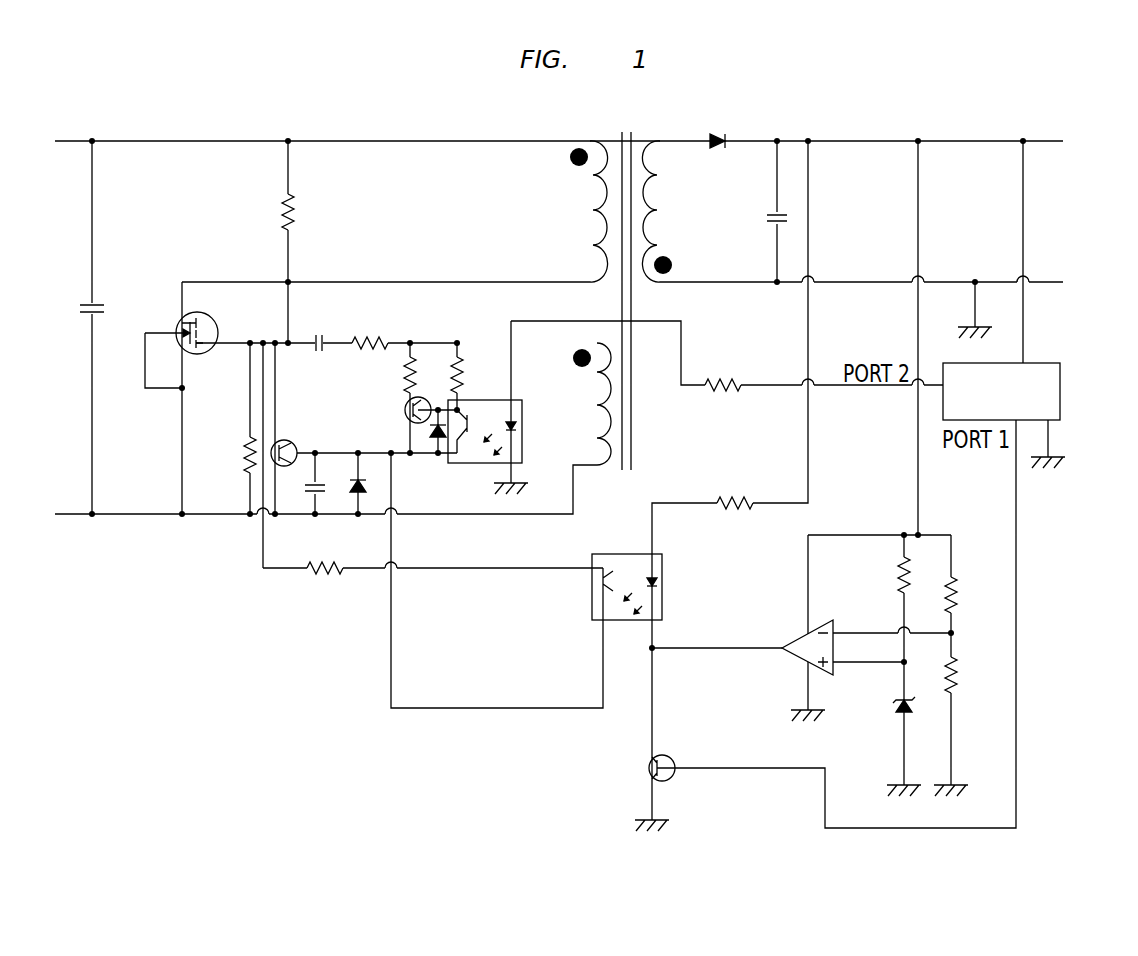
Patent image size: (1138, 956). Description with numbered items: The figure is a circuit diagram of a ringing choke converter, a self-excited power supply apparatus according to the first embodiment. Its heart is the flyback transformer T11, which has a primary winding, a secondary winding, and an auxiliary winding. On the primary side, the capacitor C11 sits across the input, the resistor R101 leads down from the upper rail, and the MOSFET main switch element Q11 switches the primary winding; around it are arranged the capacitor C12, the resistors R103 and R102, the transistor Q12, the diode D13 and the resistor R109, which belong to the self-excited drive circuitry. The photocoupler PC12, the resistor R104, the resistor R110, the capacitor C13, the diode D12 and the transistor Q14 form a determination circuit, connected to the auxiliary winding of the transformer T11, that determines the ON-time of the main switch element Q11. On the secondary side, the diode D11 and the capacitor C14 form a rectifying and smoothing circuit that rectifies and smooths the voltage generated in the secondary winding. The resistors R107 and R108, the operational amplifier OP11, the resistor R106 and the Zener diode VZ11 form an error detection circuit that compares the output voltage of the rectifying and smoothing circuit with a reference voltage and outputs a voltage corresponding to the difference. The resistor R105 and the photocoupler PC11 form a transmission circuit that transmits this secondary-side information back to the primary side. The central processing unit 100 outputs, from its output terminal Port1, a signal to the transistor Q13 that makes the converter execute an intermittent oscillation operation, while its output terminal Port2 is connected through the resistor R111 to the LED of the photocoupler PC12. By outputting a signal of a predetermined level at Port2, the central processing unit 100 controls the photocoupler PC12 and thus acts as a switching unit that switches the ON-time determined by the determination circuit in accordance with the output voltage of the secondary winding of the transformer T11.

The flyback transformer T11 is at (619, 282).
The capacitor C11 is at (73, 309).
The resistor R101 is at (261, 212).
The main switch element (MOSFET) Q11 is at (175, 329).
The capacitor C12 is at (317, 330).
The resistor R103 is at (371, 329).
The resistor R110 is at (465, 370).
The resistor R104 is at (384, 375).
The transistor Q14 is at (398, 419).
The diode D12 is at (424, 464).
The resistor R102 is at (223, 455).
The transistor Q12 is at (294, 439).
The capacitor C13 is at (312, 490).
The diode D13 is at (357, 494).
The photocoupler PC12 is at (470, 465).
The resistor R109 is at (324, 585).
The photocoupler PC11 is at (627, 572).
The diode D11 is at (720, 126).
The capacitor C14 is at (756, 219).
The resistor R111 is at (723, 401).
The resistor R105 is at (736, 488).
The operational amplifier OP11 is at (791, 637).
The resistor R106 is at (878, 575).
The resistor R107 is at (977, 596).
The resistor R108 is at (977, 675).
The Zener diode VZ11 is at (880, 706).
The transistor Q13 is at (640, 769).
The central processing unit (CPU) 100 is at (1060, 390).